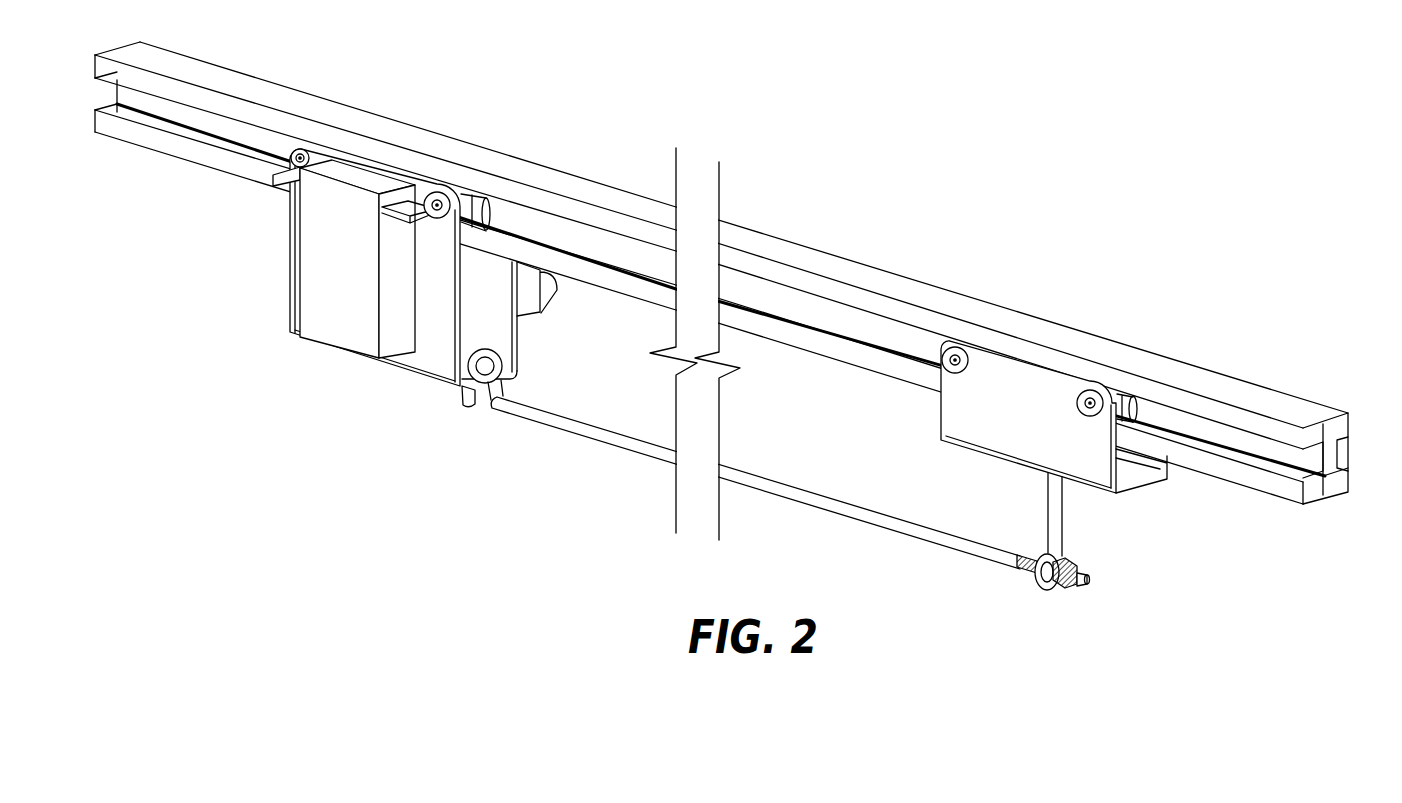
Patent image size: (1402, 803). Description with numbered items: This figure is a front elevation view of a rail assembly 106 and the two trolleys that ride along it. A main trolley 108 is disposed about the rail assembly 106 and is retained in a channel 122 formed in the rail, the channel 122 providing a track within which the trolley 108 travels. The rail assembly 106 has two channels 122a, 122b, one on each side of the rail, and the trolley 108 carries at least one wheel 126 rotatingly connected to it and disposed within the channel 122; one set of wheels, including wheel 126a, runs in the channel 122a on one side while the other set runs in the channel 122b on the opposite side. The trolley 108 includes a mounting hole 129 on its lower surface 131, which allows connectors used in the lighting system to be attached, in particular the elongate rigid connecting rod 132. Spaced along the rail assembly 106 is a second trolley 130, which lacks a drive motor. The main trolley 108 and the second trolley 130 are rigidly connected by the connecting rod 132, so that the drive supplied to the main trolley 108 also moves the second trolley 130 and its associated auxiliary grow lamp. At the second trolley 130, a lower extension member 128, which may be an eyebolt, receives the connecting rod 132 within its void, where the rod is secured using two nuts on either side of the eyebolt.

The rail assembly 106 is at (1260, 400).
The trolley 108 is at (442, 381).
The channel 122 is at (1300, 466).
The channel 122a is at (1325, 486).
The channel 122b is at (1342, 455).
The wheel 126 is at (491, 210).
The wheel 126a is at (1142, 408).
The lower extension member 128 is at (1041, 591).
The mounting hole 129 is at (473, 363).
The second trolley 130 is at (1114, 493).
The lower surface 131 is at (405, 388).
The elongate rigid connecting rod 132 is at (880, 516).